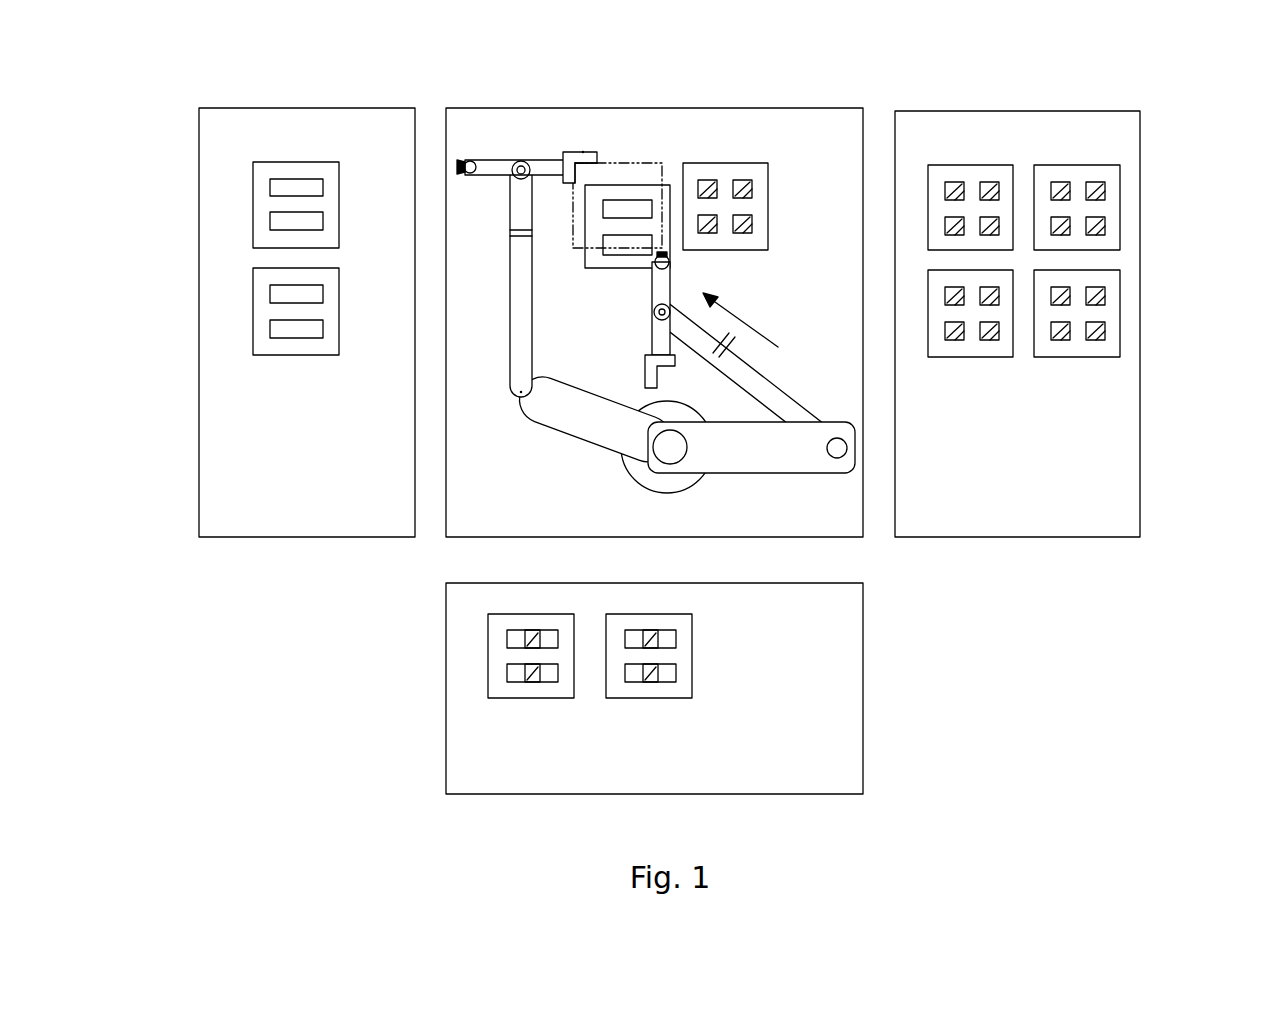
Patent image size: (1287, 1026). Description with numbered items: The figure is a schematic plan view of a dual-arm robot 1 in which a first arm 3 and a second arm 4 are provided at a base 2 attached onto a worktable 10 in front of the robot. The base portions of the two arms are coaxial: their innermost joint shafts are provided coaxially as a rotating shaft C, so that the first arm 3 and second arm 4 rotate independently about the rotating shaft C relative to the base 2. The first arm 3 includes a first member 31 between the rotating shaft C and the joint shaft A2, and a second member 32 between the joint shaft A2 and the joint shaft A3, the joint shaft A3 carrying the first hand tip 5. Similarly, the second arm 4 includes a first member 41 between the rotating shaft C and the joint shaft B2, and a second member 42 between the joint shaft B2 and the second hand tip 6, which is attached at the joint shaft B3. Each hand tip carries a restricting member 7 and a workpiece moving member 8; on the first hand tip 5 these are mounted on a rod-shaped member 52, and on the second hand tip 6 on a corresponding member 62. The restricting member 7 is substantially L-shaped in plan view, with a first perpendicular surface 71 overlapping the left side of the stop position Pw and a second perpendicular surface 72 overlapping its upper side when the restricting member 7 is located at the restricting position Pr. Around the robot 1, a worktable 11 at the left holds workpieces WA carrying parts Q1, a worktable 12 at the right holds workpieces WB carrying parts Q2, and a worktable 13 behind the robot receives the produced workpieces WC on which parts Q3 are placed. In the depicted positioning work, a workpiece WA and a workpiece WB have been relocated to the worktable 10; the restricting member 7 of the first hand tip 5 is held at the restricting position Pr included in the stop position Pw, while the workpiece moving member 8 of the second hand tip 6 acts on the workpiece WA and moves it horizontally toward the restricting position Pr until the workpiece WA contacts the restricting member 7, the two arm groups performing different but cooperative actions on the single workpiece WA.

The robot 1 is at (658, 277).
The base 2 is at (645, 480).
The first arm 3 is at (573, 319).
The second arm 4 is at (753, 414).
The first hand tip 5 is at (515, 128).
The second hand tip 6 is at (689, 320).
The restricting member 7 is at (573, 160).
The workpiece moving member 8 is at (470, 160).
The worktable 10 is at (808, 125).
The worktable 11 is at (384, 122).
The worktable 12 is at (1105, 125).
The worktable 13 is at (815, 780).
The first member 31 is at (580, 408).
The second member 32 is at (520, 283).
The first member 41 is at (795, 470).
The second member 42 is at (770, 378).
The hand link 52 is at (548, 168).
The hand link 62 is at (668, 298).
The first perpendicular surface 71 is at (583, 188).
The second perpendicular surface 72 is at (588, 157).
The joint shaft A2 is at (520, 388).
The joint shaft A3 is at (518, 175).
The joint shaft B2 is at (838, 440).
The joint shaft B3 is at (660, 305).
The rotating shaft C is at (672, 450).
The part Q1 is at (275, 188).
The part Q2 is at (953, 185).
The part Q3 is at (690, 638).
The workpiece WA is at (265, 206).
The workpiece WB is at (740, 175).
The workpiece WC is at (530, 700).
The restricting position Pr is at (591, 139).
The stop position Pw is at (653, 163).